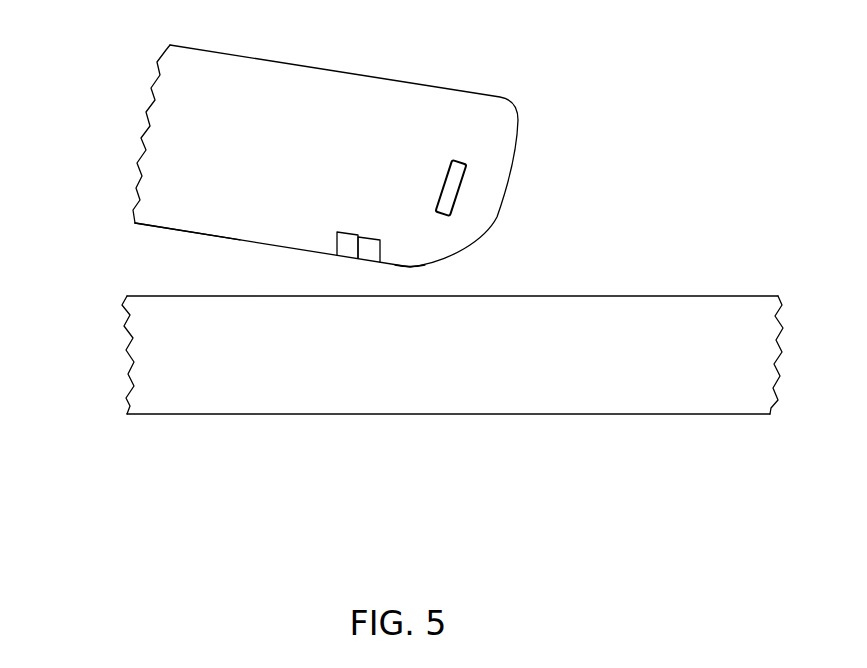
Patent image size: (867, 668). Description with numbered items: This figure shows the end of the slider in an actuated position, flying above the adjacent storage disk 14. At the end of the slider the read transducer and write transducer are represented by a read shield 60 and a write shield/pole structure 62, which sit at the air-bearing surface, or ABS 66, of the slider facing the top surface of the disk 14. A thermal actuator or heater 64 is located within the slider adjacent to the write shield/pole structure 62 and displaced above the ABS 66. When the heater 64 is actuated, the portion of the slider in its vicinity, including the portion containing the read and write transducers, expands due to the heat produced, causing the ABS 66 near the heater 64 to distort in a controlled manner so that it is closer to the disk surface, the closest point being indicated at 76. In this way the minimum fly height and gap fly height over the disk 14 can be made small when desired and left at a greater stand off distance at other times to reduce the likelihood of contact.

The storage disk 14 is at (617, 383).
The read shield 60 is at (347, 232).
The write shield/pole structure 62 is at (380, 237).
The heater 64 is at (456, 185).
The air-bearing surface 66 is at (193, 236).
The contact point 76 is at (413, 267).